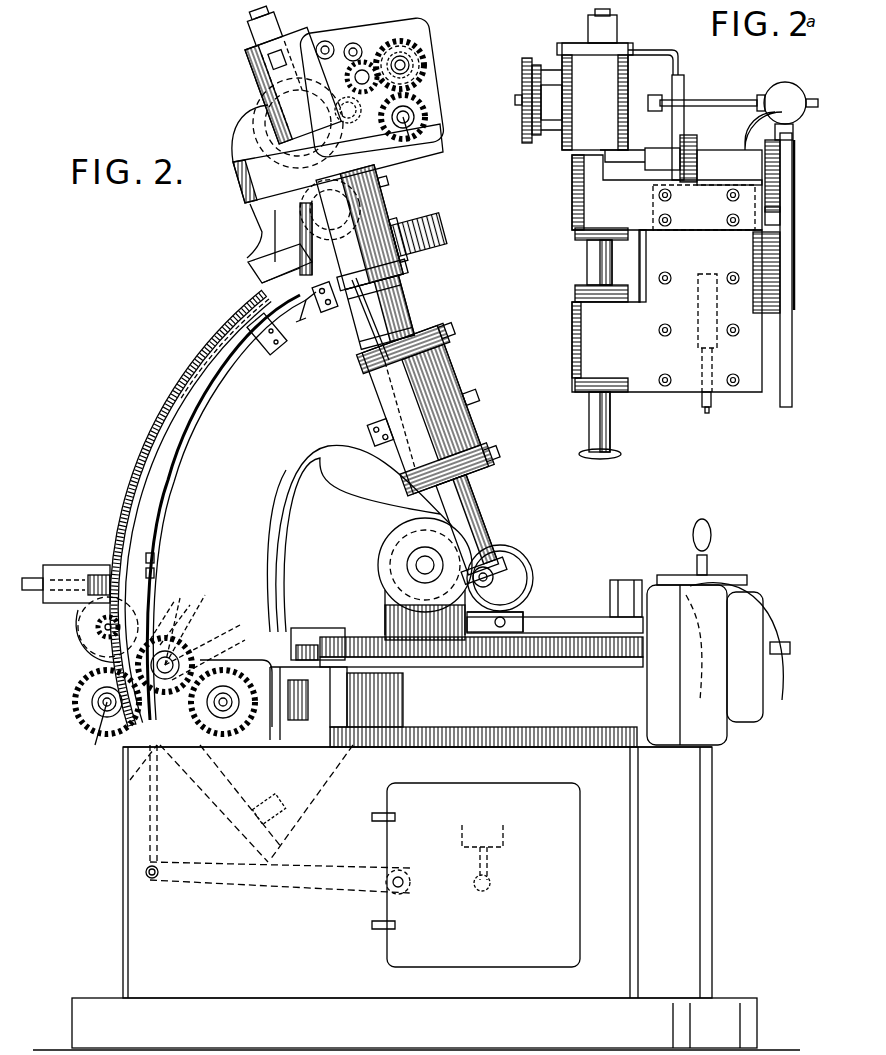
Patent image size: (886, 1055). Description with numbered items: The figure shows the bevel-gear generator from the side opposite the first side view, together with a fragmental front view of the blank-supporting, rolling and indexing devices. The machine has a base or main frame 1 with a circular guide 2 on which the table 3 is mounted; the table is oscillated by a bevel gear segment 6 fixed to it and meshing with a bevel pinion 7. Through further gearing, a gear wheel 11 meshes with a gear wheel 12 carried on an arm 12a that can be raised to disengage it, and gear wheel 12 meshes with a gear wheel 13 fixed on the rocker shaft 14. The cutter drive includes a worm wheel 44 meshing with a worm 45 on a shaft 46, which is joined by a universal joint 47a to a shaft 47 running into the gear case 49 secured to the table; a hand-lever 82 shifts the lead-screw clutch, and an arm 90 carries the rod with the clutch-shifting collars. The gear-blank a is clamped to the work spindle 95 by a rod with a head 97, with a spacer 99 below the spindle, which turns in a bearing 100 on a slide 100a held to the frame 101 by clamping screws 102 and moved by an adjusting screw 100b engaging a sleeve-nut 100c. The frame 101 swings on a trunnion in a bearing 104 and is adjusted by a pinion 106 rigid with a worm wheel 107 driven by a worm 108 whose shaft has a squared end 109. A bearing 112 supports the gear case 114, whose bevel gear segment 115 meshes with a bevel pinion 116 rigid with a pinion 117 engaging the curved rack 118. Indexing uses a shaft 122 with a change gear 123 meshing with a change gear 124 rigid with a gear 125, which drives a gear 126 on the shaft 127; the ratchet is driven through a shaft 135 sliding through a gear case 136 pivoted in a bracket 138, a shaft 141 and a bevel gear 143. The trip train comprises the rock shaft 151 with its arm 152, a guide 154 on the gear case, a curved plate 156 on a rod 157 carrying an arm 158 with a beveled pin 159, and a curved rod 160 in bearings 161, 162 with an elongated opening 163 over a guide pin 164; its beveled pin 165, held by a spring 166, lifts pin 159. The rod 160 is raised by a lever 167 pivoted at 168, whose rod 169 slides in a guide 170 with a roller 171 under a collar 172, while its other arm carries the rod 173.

In FIG. 2, the base or main frame 1 is at (416, 898).
In FIG. 2, the circular guide 2 is at (575, 745).
In FIG. 2, the table 3 is at (467, 664).
In FIG. 2, the bevel gear segment 6 is at (310, 700).
In FIG. 2, the bevel pinion 7 is at (295, 722).
In FIG. 2, the gear wheel 11 is at (226, 668).
In FIG. 2, the gear wheel 12 is at (180, 650).
In FIG. 2, the arm 12a is at (214, 644).
In FIG. 2, the gear wheel 13 is at (72, 702).
In FIG. 2, the rocker shaft 14 is at (100, 735).
In FIG. 2, the worm wheel 44 is at (385, 565).
In FIG. 2, the worm 45 is at (445, 645).
In FIG. 2, the shaft 46 is at (485, 632).
In FIG. 2, the shaft 47 is at (567, 625).
In FIG. 2, the universal joint 47a is at (515, 610).
In FIG. 2, the gear case 49 is at (740, 730).
In FIG. 2, the hand-lever 82 is at (711, 531).
In FIG. 2, the arm 90 is at (622, 580).
In FIG. 2, the work spindle 95 is at (402, 300).
In FIG. 2A, the work spindle 95 is at (587, 262).
In FIG. 2, the head 97 is at (252, 26).
In FIG. 2A, the head 97 is at (588, 20).
In FIG. 2, the spacer 99 is at (481, 498).
In FIG. 2A, the spacer 99 is at (589, 422).
In FIG. 2, the bearing 100 is at (466, 428).
In FIG. 2A, the bearing 100 is at (572, 339).
In FIG. 2A, the slide 100a is at (688, 382).
In FIG. 2A, the adjusting screw 100b is at (707, 414).
In FIG. 2A, the sleeve-nut 100c is at (717, 307).
In FIG. 2, the support or frame 101 is at (345, 536).
In FIG. 2, the clamping screws 102 is at (447, 330).
In FIG. 2A, the clamping screws 102 is at (726, 268).
In FIG. 2, the bearing 104 is at (534, 578).
In FIG. 2, the pinion 106 is at (100, 632).
In FIG. 2, the worm wheel 107 is at (80, 628).
In FIG. 2, the worm 108 is at (97, 565).
In FIG. 2, the squared end 109 is at (32, 578).
In FIG. 2, the bearing 112 is at (382, 192).
In FIG. 2A, the bearing 112 is at (572, 203).
In FIG. 2, the gear case 114 is at (432, 99).
In FIG. 2A, the gear case 114 is at (595, 96).
In FIG. 2, the bevel gear segment 115 is at (250, 228).
In FIG. 2A, the bevel gear segment 115 is at (688, 135).
In FIG. 2A, the bevel pinion 116 is at (712, 150).
In FIG. 2A, the pinion 117 is at (780, 165).
In FIG. 2, the curved rack or spur-gear segment 118 is at (448, 225).
In FIG. 2A, the curved rack or spur-gear segment 118 is at (780, 214).
In FIG. 2, the shaft 122 is at (412, 135).
In FIG. 2, the change gear 123 is at (420, 114).
In FIG. 2, the change gear 124 is at (420, 42).
In FIG. 2A, the change gear 124 is at (524, 58).
In FIG. 2, the gear 125 is at (428, 68).
In FIG. 2A, the gear 125 is at (536, 65).
In FIG. 2, the gear 126 is at (361, 70).
In FIG. 2, the shaft 127 is at (354, 76).
In FIG. 2A, the shaft 135 is at (718, 100).
In FIG. 2A, the gear case 136 is at (792, 85).
In FIG. 2A, the bracket 138 is at (760, 90).
In FIG. 2A, the shaft 141 is at (793, 370).
In FIG. 2, the bevel gear 143 is at (494, 572).
In FIG. 2, the rock shaft 151 is at (326, 41).
In FIG. 2, the arm 152 is at (255, 84).
In FIG. 2A, the guide 154 is at (684, 95).
In FIG. 2, the plate 156 is at (388, 177).
In FIG. 2, the rod 157 is at (362, 366).
In FIG. 2A, the rod 157 is at (641, 258).
In FIG. 2, the arm 158 is at (252, 278).
In FIG. 2, the beveled pin 159 is at (232, 302).
In FIG. 2, the rod 160 is at (192, 418).
In FIG. 2, the bearing 161 is at (262, 348).
In FIG. 2, the bearing 162 is at (285, 853).
In FIG. 2, the elongated opening 163 is at (155, 558).
In FIG. 2A, the elongated opening 163 is at (665, 50).
In FIG. 2, the guide pin 164 is at (155, 576).
In FIG. 2, the beveled pin 165 is at (322, 310).
In FIG. 2, the spring 166 is at (302, 322).
In FIG. 2, the lever 167 is at (332, 890).
In FIG. 2, the pivot 168 is at (402, 870).
In FIG. 2, the rod 169 is at (148, 832).
In FIG. 2, the guide 170 is at (125, 790).
In FIG. 2, the roller 171 is at (201, 627).
In FIG. 2, the collar 172 is at (179, 628).
In FIG. 2, the rod 173 is at (490, 863).
In FIG. 2, the gear-blank a is at (500, 560).
In FIG. 2A, the gear-blank a is at (618, 455).